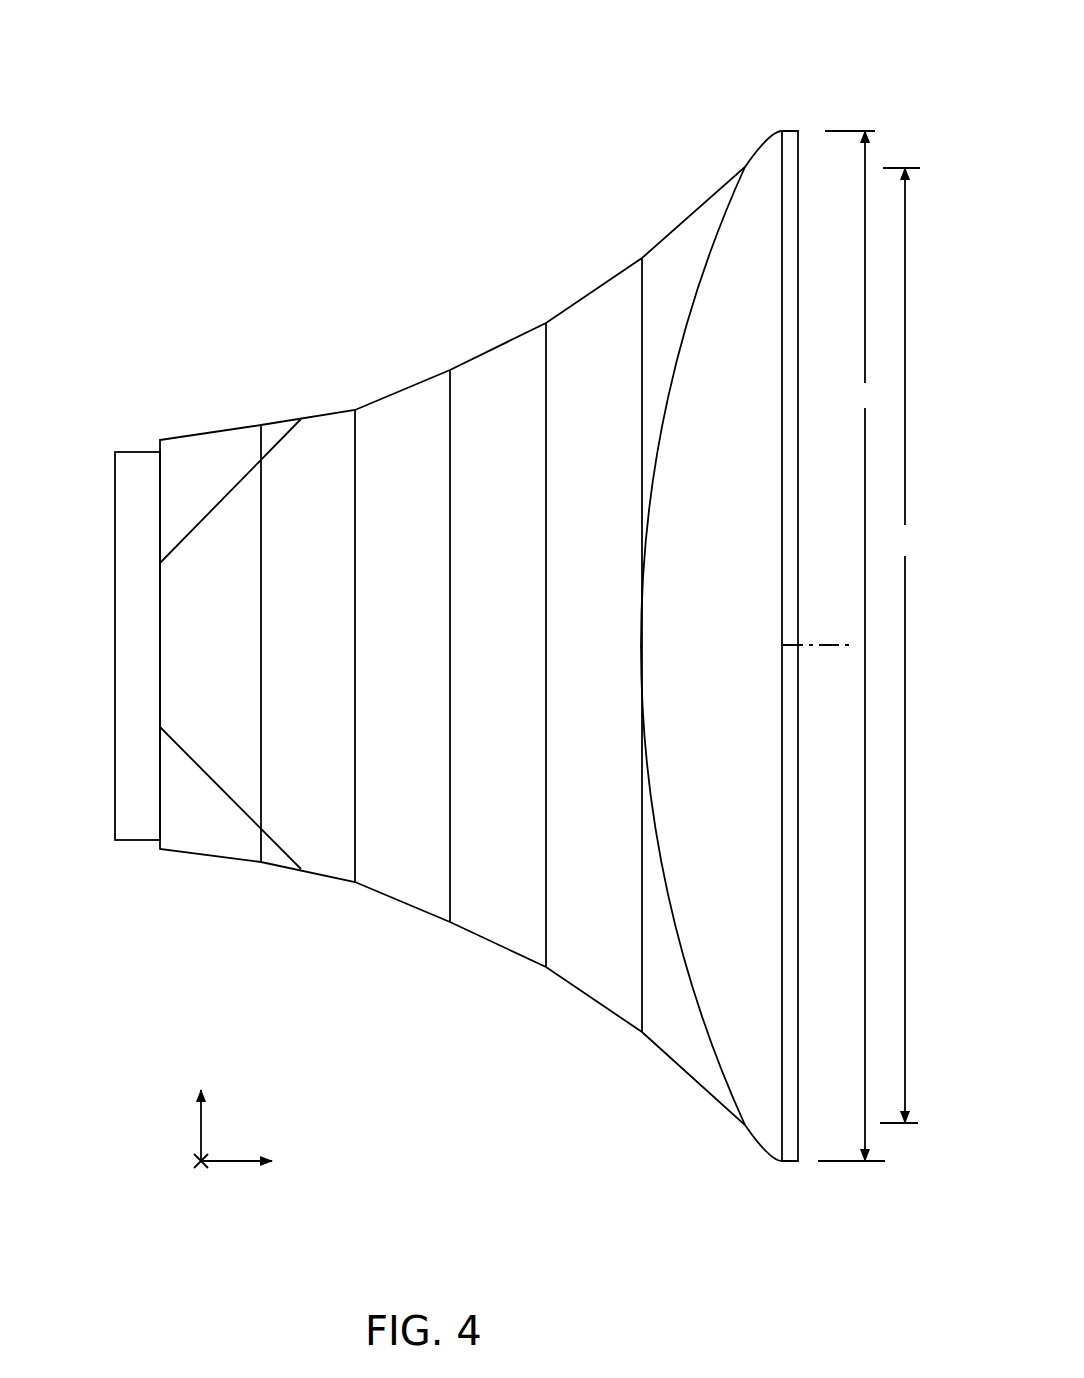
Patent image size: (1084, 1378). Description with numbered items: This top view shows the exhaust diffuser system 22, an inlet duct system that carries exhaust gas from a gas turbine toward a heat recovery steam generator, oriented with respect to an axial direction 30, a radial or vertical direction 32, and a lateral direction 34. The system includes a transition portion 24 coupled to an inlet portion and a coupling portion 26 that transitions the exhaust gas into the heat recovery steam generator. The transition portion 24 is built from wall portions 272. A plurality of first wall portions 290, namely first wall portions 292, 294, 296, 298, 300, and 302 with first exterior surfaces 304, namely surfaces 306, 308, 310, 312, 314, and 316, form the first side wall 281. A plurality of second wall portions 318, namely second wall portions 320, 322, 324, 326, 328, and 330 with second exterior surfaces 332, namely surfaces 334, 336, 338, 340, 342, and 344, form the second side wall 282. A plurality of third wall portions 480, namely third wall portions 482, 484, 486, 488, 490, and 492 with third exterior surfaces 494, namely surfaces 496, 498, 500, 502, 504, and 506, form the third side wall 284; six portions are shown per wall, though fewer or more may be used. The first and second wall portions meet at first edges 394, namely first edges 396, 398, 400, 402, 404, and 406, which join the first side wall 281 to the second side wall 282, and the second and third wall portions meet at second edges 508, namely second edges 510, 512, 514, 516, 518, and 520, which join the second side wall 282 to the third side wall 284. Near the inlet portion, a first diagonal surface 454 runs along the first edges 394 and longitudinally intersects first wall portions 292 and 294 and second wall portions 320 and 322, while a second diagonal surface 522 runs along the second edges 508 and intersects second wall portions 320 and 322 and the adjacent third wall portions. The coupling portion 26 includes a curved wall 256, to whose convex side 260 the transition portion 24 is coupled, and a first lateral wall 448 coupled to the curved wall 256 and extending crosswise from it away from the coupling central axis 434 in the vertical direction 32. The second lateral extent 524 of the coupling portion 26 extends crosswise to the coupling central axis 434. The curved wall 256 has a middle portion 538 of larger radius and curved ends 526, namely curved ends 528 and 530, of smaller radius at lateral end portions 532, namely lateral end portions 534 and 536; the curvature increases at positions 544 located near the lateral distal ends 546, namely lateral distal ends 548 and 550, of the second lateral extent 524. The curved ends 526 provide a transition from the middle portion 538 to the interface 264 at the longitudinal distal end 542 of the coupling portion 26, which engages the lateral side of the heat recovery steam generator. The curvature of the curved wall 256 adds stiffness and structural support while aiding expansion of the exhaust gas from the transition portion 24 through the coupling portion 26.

The exhaust diffuser system 22 is at (445, 646).
The transition portion 24 is at (479, 646).
The coupling portion 26 is at (790, 47).
The axial direction 30 is at (256, 1199).
The radial or vertical direction 32 is at (195, 1201).
The lateral direction 34 is at (213, 1113).
The curved wall 256 is at (692, 433).
The convex side 260 is at (623, 849).
The interface 264 is at (823, 875).
The wall portions 272 is at (114, 876).
The first side wall 281 is at (520, 1040).
The second side wall 282 is at (157, 481).
The third side wall 284 is at (422, 245).
The first wall portions 290 is at (192, 920).
The first wall portion 292 is at (250, 902).
The first wall portion 294 is at (302, 935).
The first wall portion 296 is at (391, 955).
The first wall portion 298 is at (488, 1023).
The first wall portion 300 is at (592, 1057).
The first wall portion 302 is at (685, 1112).
The first exterior surfaces 304 is at (125, 895).
The first exterior surface 306 is at (161, 928).
The first exterior surface 308 is at (275, 949).
The first exterior surface 310 is at (352, 926).
The first exterior surface 312 is at (438, 973).
The first exterior surface 314 is at (566, 1069).
The first exterior surface 316 is at (631, 1106).
The second wall portions 318 is at (118, 646).
The second wall portion 320 is at (240, 656).
The second wall portion 322 is at (330, 656).
The second wall portion 324 is at (425, 656).
The second wall portion 326 is at (520, 656).
The second wall portion 328 is at (617, 656).
The second wall portion 330 is at (690, 293).
The second exterior surfaces 332 is at (118, 673).
The second exterior surface 334 is at (211, 384).
The second exterior surface 336 is at (335, 356).
The second exterior surface 338 is at (432, 371).
The second exterior surface 340 is at (498, 335).
The second exterior surface 342 is at (623, 247).
The second exterior surface 344 is at (684, 673).
The first edges 394 is at (490, 791).
The first edge 396 is at (282, 803).
The first edge 398 is at (321, 834).
The first edge 400 is at (405, 855).
The first edge 402 is at (510, 930).
The first edge 404 is at (595, 944).
The first edge 406 is at (725, 1031).
The coupling central axis 434 is at (818, 606).
The first lateral wall 448 is at (732, 656).
The first diagonal surface 454 is at (212, 825).
The third wall portions 480 is at (120, 387).
The third wall portion 482 is at (132, 383).
The third wall portion 484 is at (313, 381).
The third wall portion 486 is at (370, 357).
The third wall portion 488 is at (511, 271).
The third wall portion 490 is at (557, 263).
The third wall portion 492 is at (722, 146).
The third exterior surfaces 494 is at (109, 396).
The third exterior surface 496 is at (127, 423).
The third exterior surface 498 is at (277, 387).
The third exterior surface 500 is at (403, 317).
The third exterior surface 502 is at (468, 307).
The third exterior surface 504 is at (585, 239).
The third exterior surface 506 is at (680, 165).
The second edges 508 is at (583, 471).
The second edge 510 is at (235, 496).
The second edge 512 is at (307, 469).
The second edge 514 is at (382, 458).
The second edge 516 is at (497, 411).
The second edge 518 is at (598, 358).
The second edge 520 is at (723, 261).
The second diagonal surface 522 is at (212, 482).
The second lateral extent 524 is at (851, 646).
The curved ends 526 is at (825, 63).
The curved end 528 is at (748, 70).
The curved end 530 is at (757, 1220).
The lateral end portions 532 is at (867, 86).
The lateral end portion 534 is at (827, 171).
The lateral end portion 536 is at (855, 1200).
The middle portion 538 is at (693, 553).
The longitudinal distal end 542 is at (808, 1217).
The positions 544 is at (902, 645).
The lateral distal ends 546 is at (900, 649).
The lateral distal end 548 is at (903, 150).
The lateral distal end 550 is at (906, 1141).